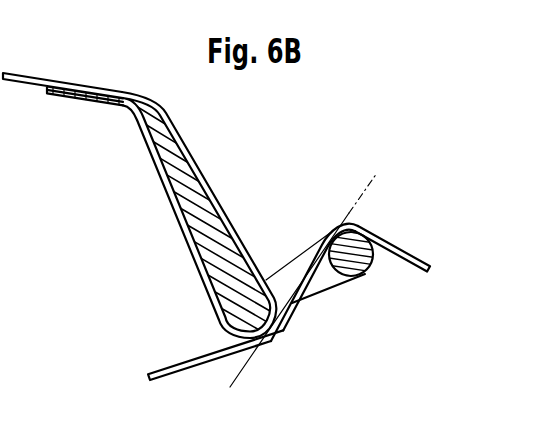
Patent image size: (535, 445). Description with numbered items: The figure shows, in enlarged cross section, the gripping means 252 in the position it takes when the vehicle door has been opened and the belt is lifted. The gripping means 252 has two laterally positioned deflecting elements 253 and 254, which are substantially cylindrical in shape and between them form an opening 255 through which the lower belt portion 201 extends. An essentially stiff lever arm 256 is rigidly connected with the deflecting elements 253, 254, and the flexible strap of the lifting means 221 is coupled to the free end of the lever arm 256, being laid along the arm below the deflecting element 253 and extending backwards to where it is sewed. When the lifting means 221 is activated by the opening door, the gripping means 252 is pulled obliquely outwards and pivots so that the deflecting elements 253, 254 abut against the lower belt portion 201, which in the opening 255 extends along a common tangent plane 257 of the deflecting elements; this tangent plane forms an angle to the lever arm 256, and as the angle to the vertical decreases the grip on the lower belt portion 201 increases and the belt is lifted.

The lifting means 221 is at (25, 77).
The gripping means 252 is at (190, 280).
The lever arm 256 is at (190, 205).
The deflecting element 253 is at (238, 329).
The opening 255 is at (323, 283).
The lower belt portion 201 is at (415, 261).
The deflecting element 254 is at (360, 266).
The common tangent plane 257 is at (357, 188).